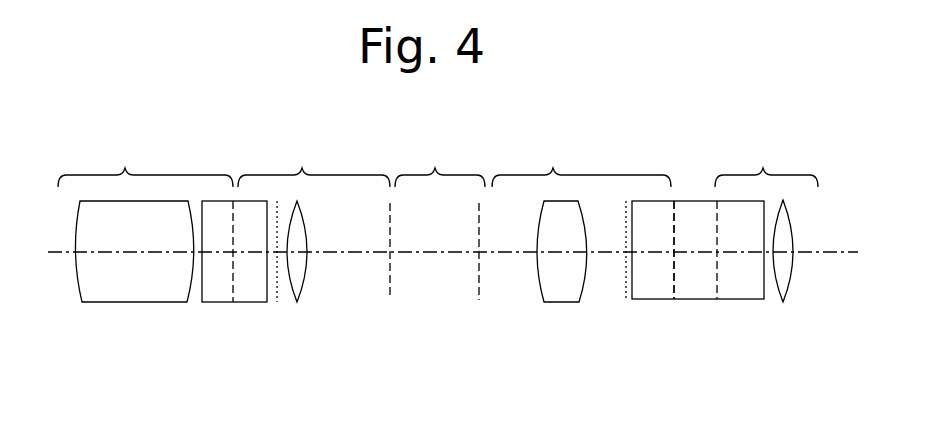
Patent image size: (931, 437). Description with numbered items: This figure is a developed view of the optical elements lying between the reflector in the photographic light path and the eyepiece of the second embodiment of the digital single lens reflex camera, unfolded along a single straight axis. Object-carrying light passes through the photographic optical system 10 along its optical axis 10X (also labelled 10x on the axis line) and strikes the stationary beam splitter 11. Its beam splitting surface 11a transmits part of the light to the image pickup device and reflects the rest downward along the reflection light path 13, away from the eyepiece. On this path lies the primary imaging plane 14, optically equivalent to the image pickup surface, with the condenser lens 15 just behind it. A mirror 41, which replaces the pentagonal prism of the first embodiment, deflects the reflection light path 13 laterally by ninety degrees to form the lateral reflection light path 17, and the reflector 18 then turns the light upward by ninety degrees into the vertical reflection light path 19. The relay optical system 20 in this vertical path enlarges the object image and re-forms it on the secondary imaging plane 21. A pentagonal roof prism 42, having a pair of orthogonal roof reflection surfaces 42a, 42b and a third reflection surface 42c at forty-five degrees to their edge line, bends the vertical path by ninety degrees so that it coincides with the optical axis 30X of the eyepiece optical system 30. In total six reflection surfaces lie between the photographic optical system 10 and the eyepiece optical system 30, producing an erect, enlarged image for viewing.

The optical axis 10x is at (53, 252).
The optical axis of the photographic optical system 10X is at (145, 163).
The reflection light path 13 is at (314, 163).
The lateral reflection light path 17 is at (440, 163).
The vertical reflection light path 19 is at (581, 163).
The optical axis of the eyepiece optical system 30X is at (766, 166).
The photographic optical system 10 is at (108, 302).
The beam splitter 11 is at (217, 302).
The beam splitting surface 11a is at (230, 302).
The primary imaging plane 14 is at (277, 302).
The condenser lens 15 is at (297, 302).
The mirror 41 is at (390, 298).
The reflector 18 is at (479, 300).
The relay optical system 20 is at (559, 302).
The secondary imaging plane 21 is at (626, 298).
The pentagonal roof prism 42 is at (653, 298).
The roof reflection surface 42a is at (674, 299).
The roof reflection surface 42b is at (706, 301).
The third reflection surface 42c is at (717, 299).
The eyepiece optical system 30 is at (783, 302).